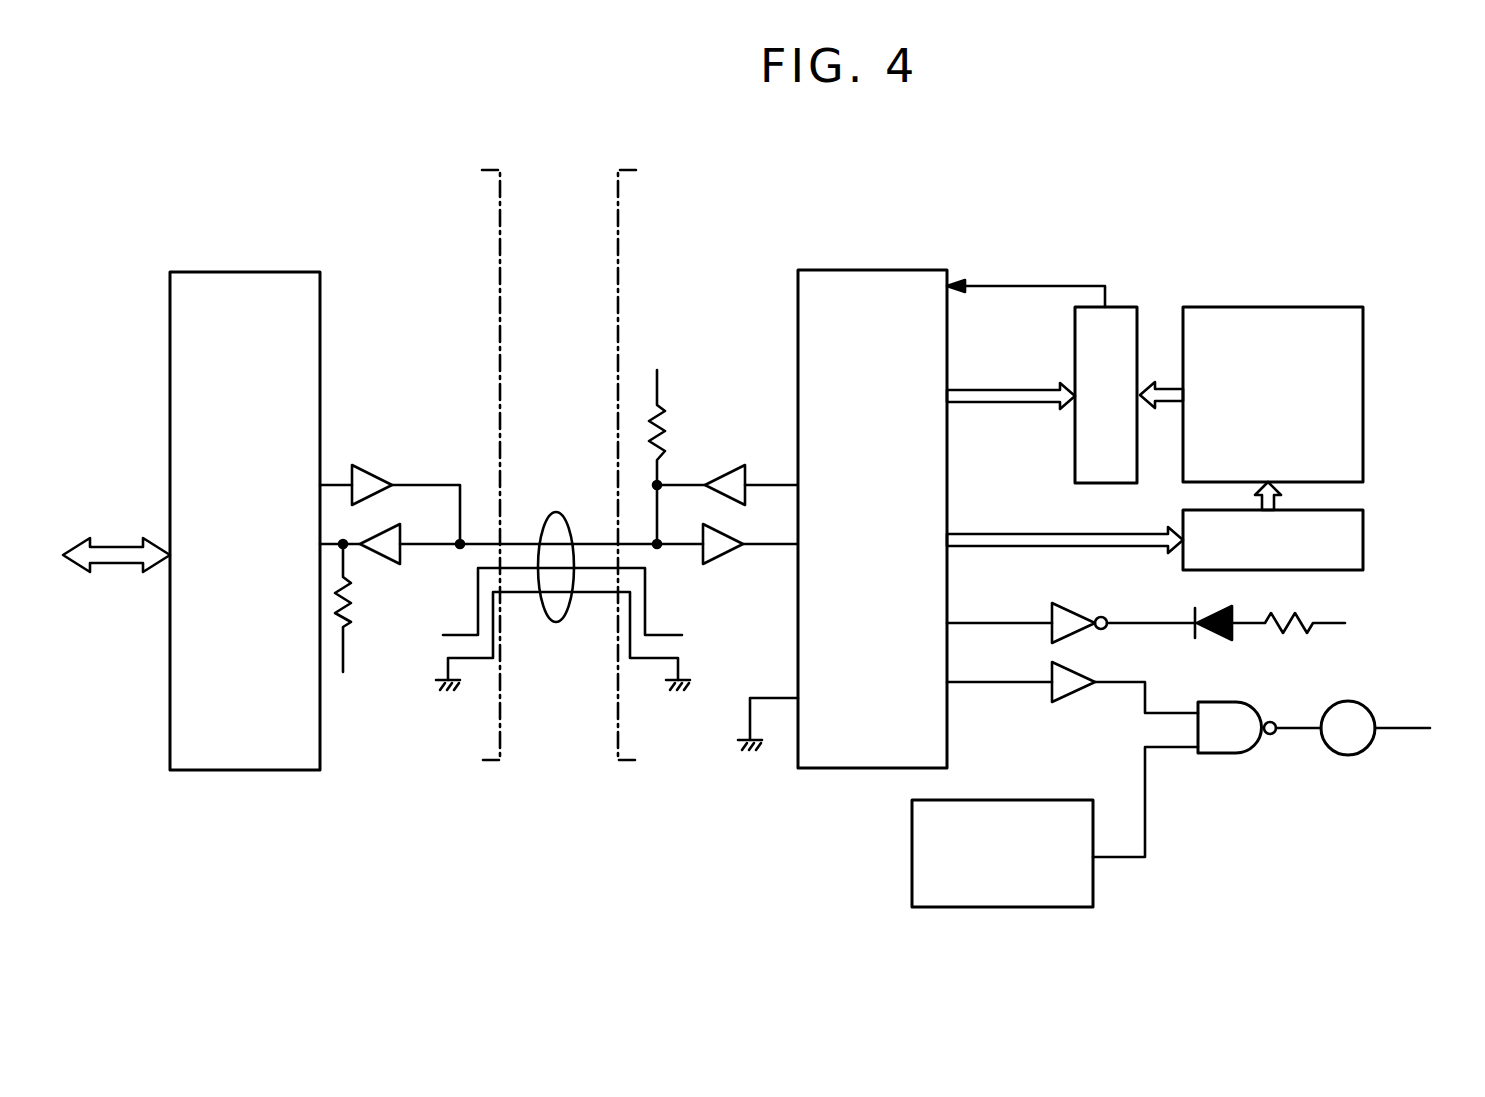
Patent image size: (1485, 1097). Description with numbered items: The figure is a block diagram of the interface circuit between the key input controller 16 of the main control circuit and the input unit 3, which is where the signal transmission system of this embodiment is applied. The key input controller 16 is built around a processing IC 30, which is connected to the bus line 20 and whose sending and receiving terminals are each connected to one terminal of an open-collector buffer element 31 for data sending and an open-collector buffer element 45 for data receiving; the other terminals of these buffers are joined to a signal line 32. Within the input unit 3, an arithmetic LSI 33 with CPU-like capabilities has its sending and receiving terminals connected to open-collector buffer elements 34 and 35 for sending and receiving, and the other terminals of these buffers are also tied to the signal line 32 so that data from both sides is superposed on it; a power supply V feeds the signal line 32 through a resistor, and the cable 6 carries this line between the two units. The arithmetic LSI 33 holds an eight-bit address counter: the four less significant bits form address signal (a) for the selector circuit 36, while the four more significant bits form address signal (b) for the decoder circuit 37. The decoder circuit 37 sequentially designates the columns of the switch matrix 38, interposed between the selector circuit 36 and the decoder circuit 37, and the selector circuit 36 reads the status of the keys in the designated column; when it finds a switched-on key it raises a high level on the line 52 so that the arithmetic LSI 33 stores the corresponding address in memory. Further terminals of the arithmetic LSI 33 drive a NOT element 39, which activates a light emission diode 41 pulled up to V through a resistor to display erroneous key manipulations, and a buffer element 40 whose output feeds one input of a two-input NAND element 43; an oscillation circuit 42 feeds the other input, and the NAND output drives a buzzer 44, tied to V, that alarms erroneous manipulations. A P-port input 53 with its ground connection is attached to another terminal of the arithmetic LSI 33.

The input unit 3 is at (610, 178).
The cable 6 is at (549, 517).
The key input controller 16 is at (502, 190).
The bus line 20 is at (96, 545).
The processing IC 30 is at (262, 272).
The buffer element 31 is at (372, 472).
The signal line 32 is at (440, 550).
The arithmetic LSI 33 is at (886, 270).
The buffer element 34 is at (724, 465).
The buffer element 35 is at (724, 556).
The selector circuit 36 is at (1115, 307).
The decoder circuit 37 is at (1363, 540).
The switch matrix 38 is at (1363, 441).
The NOT element 39 is at (1080, 613).
The buffer element 40 is at (1082, 668).
The light emission diode 41 is at (1215, 612).
The oscillation circuit 42 is at (1075, 800).
The NAND element 43 is at (1244, 745).
The buzzer 44 is at (1335, 702).
The buffer element 45 is at (390, 562).
The line 52 is at (1047, 286).
The P-port input 53 is at (762, 698).